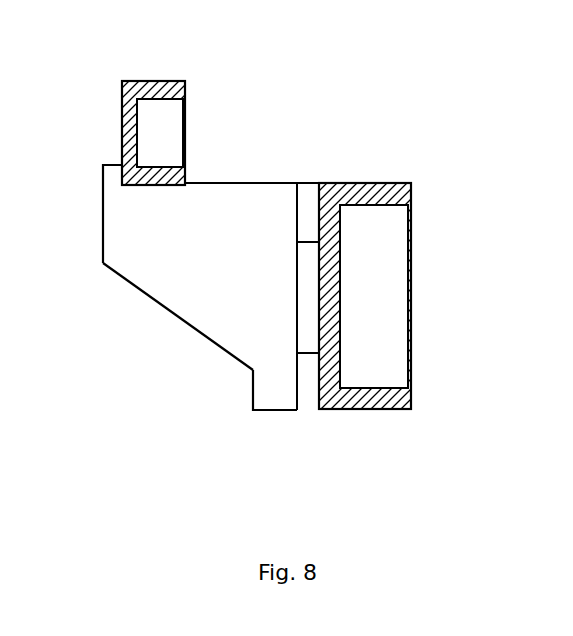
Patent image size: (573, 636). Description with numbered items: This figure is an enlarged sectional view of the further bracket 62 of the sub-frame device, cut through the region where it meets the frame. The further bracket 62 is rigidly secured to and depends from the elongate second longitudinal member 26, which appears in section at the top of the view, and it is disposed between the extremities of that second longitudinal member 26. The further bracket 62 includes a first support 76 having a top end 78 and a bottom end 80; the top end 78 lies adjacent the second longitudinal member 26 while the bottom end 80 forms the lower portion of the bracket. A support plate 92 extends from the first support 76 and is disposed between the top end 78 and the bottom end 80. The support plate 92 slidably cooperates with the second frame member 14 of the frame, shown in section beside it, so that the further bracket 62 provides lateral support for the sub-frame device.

The second frame member 14 is at (384, 190).
The second longitudinal member 26 is at (127, 116).
The further bracket 62 is at (115, 320).
The first support 76 is at (233, 317).
The top end 78 is at (253, 200).
The bottom end 80 is at (272, 395).
The support plate 92 is at (312, 227).